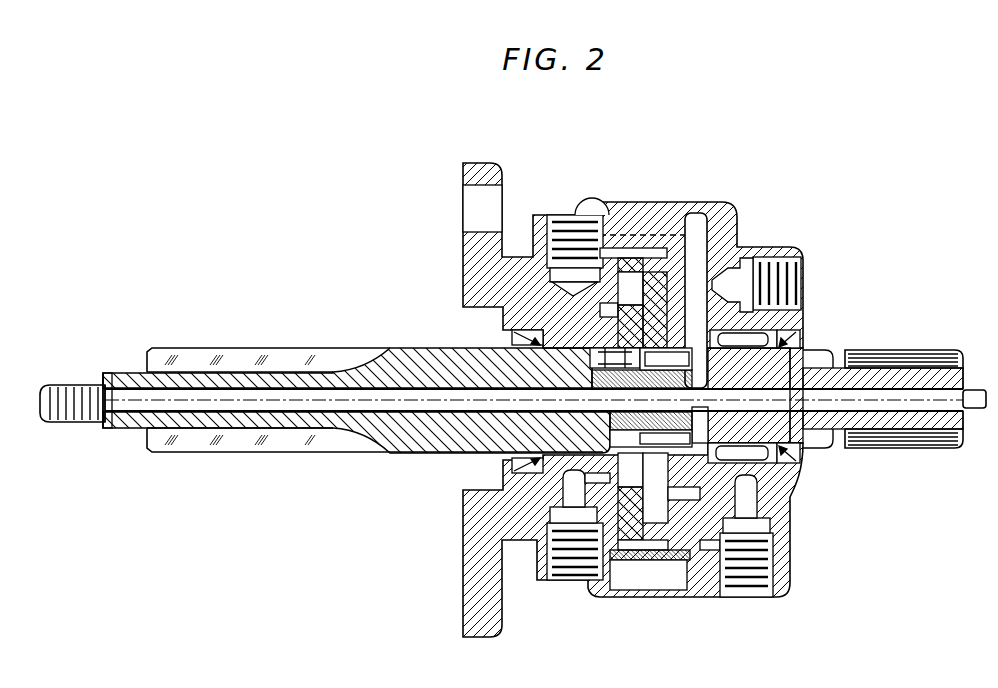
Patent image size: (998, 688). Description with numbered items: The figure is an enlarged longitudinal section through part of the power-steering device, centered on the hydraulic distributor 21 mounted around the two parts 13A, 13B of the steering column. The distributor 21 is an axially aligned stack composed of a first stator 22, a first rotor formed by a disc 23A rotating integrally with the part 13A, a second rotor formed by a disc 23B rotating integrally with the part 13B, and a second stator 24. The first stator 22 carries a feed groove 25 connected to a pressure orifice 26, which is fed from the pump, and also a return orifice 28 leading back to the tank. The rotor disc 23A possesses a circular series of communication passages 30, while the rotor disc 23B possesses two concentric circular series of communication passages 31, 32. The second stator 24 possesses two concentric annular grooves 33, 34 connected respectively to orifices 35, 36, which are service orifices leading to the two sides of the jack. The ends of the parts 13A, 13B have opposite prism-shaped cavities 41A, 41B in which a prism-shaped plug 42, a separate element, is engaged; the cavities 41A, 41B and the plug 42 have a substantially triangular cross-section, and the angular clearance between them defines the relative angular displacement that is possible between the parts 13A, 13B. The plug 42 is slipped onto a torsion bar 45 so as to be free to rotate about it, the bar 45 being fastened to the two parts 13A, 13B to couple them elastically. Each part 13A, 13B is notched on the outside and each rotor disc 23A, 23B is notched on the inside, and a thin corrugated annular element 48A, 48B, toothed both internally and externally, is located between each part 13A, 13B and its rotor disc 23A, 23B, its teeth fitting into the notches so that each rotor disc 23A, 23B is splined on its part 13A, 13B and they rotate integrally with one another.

The part of the steering column 13A is at (914, 350).
The part of the steering column 13B is at (216, 350).
The distributor 21 is at (736, 216).
The first stator 22 is at (695, 212).
The rotor disc 23A is at (663, 248).
The rotor disc 23B is at (630, 272).
The second stator 24 is at (607, 213).
The feed groove 25 is at (675, 305).
The pressure orifice 26 is at (744, 596).
The return orifice 28 is at (803, 292).
The communication passages 30 is at (653, 514).
The communication passages 31 is at (552, 276).
The communication passages 32 is at (635, 481).
The annular groove 33 is at (610, 296).
The annular groove 34 is at (608, 324).
The service orifice 35 is at (556, 212).
The service orifice 36 is at (561, 582).
The prism-shaped cavity 41A is at (690, 418).
The prism-shaped cavity 41B is at (597, 420).
The prism-shaped plug 42 is at (598, 382).
The torsion bar 45 is at (444, 392).
The corrugated annular element 48A is at (696, 384).
The corrugated annular element 48B is at (612, 357).